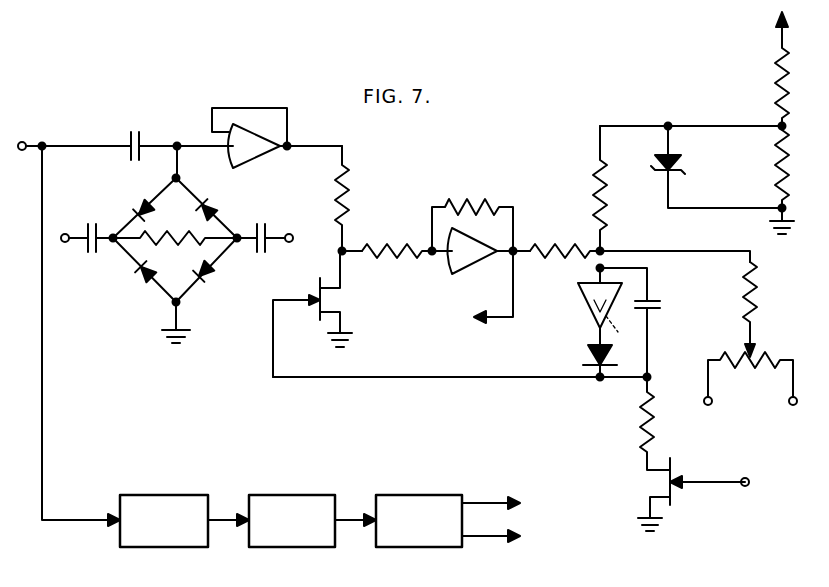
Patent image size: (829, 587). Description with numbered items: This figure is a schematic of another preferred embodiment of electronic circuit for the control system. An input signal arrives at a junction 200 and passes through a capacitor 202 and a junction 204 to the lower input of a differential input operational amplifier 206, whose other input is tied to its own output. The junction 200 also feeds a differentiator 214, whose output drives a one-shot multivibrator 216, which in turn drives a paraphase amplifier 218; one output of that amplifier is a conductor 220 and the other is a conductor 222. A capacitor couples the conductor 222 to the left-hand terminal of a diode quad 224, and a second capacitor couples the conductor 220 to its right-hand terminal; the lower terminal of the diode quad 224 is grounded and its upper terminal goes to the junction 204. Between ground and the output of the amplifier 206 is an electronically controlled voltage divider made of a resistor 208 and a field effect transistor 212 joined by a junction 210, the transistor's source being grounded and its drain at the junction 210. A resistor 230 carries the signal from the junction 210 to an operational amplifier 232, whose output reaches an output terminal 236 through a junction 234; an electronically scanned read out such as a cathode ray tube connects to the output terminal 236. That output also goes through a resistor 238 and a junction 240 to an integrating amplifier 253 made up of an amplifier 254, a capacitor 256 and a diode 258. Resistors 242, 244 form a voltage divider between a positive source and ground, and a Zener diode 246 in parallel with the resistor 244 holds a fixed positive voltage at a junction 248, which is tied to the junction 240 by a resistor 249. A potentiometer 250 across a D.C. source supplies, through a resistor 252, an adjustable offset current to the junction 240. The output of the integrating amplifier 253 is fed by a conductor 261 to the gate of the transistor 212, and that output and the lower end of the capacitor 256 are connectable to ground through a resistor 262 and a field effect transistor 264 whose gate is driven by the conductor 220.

The junction 200 is at (44, 144).
The capacitor 202 is at (134, 131).
The junction 204 is at (175, 150).
The differential input operational amplifier 206 is at (248, 156).
The resistor 208 is at (344, 176).
The junction 210 is at (346, 250).
The field effect transistor 212 is at (318, 311).
The differentiator 214 is at (159, 495).
The one-shot multivibrator 216 is at (287, 495).
The paraphase amplifier 218 is at (414, 495).
The conductor 220 is at (268, 252).
The conductor 222 is at (69, 249).
The diode quad 224 is at (171, 273).
The resistor 230 is at (396, 262).
The operational amplifier 232 is at (457, 262).
The junction 234 is at (516, 257).
The output terminal 236 is at (485, 299).
The resistor 238 is at (557, 243).
The junction 240 is at (605, 249).
The resistor 242 is at (775, 68).
The resistor 244 is at (776, 180).
The Zener diode 246 is at (660, 154).
The junction 248 is at (668, 124).
The resistor 249 is at (597, 187).
The potentiometer 250 is at (761, 372).
The resistor 252 is at (756, 269).
The integrating amplifier 253 is at (621, 335).
The amplifier 254 is at (593, 300).
The capacitor 256 is at (662, 300).
The diode 258 is at (587, 356).
The conductor 261 is at (424, 378).
The resistor 262 is at (643, 413).
The field effect transistor 264 is at (656, 485).